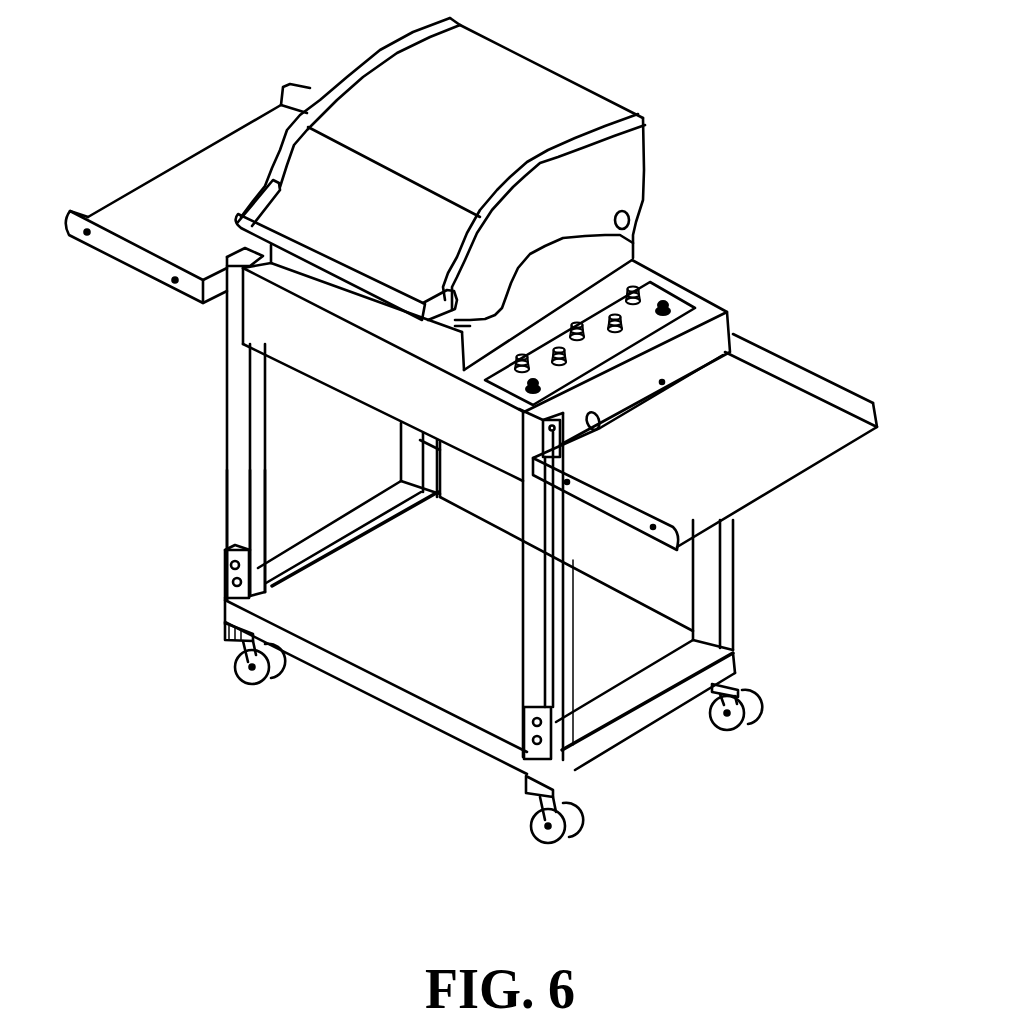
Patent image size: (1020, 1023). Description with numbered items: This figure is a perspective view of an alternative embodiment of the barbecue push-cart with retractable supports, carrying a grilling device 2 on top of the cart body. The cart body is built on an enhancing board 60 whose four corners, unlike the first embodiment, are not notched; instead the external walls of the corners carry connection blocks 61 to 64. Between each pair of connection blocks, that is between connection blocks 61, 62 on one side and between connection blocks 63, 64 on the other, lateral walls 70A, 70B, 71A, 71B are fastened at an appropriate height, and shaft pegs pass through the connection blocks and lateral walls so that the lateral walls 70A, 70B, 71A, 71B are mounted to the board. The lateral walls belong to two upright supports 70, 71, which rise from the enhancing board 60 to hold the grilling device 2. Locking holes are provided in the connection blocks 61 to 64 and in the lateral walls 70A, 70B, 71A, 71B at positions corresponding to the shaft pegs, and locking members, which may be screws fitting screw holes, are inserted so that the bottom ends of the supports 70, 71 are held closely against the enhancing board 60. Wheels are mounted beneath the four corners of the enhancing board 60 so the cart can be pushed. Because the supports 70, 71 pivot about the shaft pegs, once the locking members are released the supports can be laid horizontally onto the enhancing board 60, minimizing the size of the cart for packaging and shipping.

The grilling device 2 is at (490, 249).
The enhancing board 60 is at (538, 650).
The connection block 61 is at (704, 671).
The connection block 62 is at (376, 719).
The connection block 63 is at (565, 545).
The connection block 64 is at (180, 614).
The support 70 is at (681, 539).
The lateral wall 70A is at (784, 622).
The lateral wall 70B is at (609, 614).
The support 71 is at (253, 359).
The lateral wall 71A is at (356, 460).
The lateral wall 71B is at (305, 552).